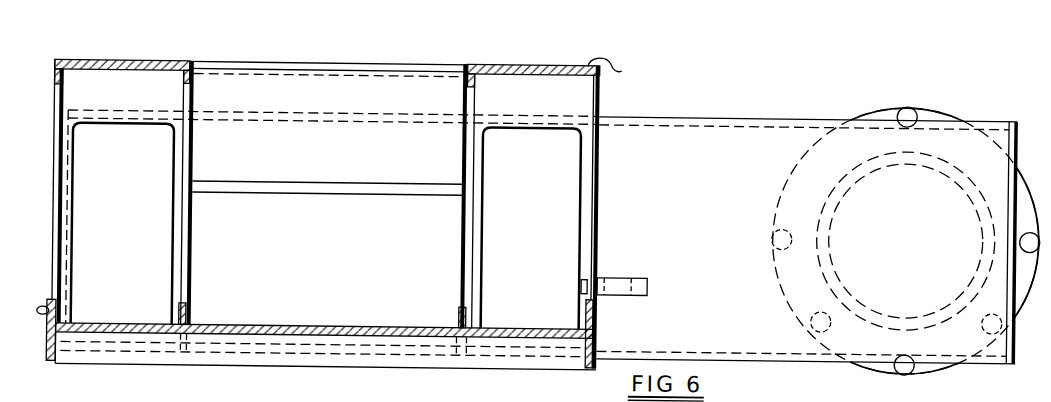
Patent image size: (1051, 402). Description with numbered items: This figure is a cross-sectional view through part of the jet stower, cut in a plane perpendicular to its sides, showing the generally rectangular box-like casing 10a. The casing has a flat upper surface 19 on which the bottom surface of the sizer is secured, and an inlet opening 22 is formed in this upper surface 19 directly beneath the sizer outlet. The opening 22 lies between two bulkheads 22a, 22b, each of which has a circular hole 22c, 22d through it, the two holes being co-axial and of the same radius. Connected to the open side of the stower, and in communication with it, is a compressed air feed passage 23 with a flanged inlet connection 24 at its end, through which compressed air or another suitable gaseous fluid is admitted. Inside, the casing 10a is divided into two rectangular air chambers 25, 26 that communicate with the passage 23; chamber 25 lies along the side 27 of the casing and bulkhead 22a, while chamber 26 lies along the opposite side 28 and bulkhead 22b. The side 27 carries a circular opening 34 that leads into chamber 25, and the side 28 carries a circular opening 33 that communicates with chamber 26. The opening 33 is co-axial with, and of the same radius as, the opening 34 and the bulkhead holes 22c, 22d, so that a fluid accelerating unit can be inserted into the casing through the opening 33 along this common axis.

The casing 10a is at (302, 105).
The flat upper surface 19 is at (613, 71).
The inlet opening 22 is at (452, 73).
The bulkhead 22a is at (190, 320).
The bulkhead 22b is at (458, 316).
The circular hole 22c is at (192, 104).
The circular hole 22d is at (464, 103).
The compressed air feed passage 23 is at (727, 137).
The flanged inlet connection 24 is at (942, 162).
The air chamber 25 is at (122, 224).
The air chamber 26 is at (531, 228).
The side of casing 27 is at (65, 319).
The side of casing 28 is at (600, 342).
The circular opening 33 is at (628, 297).
The circular opening 34 is at (62, 97).